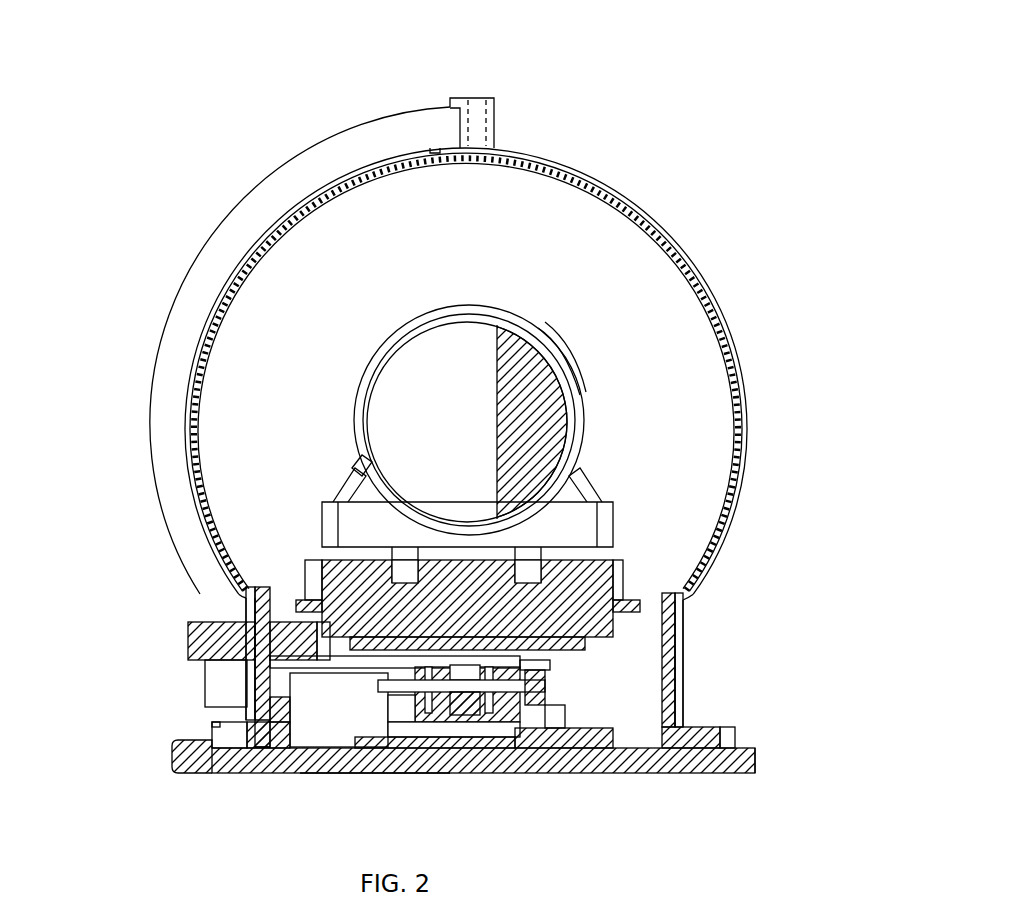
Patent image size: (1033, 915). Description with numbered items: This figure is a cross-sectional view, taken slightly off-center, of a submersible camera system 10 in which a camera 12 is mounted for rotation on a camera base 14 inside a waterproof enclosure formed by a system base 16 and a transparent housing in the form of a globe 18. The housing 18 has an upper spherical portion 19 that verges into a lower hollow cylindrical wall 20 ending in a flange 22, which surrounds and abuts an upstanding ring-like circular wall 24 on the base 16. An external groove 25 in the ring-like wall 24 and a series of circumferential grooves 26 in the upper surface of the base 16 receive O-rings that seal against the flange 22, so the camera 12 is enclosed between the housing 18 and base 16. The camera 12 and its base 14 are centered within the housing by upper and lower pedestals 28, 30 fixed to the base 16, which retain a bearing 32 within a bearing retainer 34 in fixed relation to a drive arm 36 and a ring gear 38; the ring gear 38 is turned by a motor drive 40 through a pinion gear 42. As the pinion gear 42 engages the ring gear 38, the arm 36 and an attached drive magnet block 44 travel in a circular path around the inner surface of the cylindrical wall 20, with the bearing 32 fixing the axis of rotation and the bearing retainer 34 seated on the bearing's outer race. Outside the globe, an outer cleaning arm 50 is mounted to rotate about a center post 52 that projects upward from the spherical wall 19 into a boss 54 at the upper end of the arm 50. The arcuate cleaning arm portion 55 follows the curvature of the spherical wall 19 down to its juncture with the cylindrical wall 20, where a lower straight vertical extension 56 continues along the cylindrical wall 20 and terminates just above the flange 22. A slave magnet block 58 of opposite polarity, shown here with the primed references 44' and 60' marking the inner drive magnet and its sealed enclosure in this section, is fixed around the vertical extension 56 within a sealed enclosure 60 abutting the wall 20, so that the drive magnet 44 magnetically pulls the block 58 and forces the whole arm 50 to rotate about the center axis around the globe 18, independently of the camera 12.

The camera system 10 is at (658, 200).
The camera 12 is at (348, 410).
The camera base 14 is at (350, 590).
The system base 16 is at (755, 760).
The globe 18 is at (718, 553).
The upper spherical portion 19 is at (747, 465).
The cylindrical wall 20 is at (667, 673).
The flange 22 is at (258, 733).
The ring-like circular wall 24 is at (243, 720).
The external groove 25 is at (275, 748).
The circumferential grooves 26 is at (232, 772).
The upper pedestal 28 is at (515, 651).
The lower pedestal 30 is at (352, 775).
The bearing 32 is at (533, 733).
The bearing retainer 34 is at (555, 705).
The drive arm 36 is at (343, 667).
The ring gear 38 is at (545, 700).
The motor drive 40 is at (580, 692).
The pinion gear 42 is at (750, 773).
The left side wall 44' is at (186, 641).
The drive magnet block 44 is at (186, 641).
The outer cleaning arm 50 is at (208, 245).
The center post 52 is at (455, 95).
The boss 54 is at (495, 108).
The arcuate cleaning arm portion 55 is at (318, 163).
The lower straight vertical extension 56 is at (207, 690).
The slave magnet block 58 is at (190, 636).
The wall liner 60' is at (178, 641).
The sealed enclosure 60 is at (178, 641).